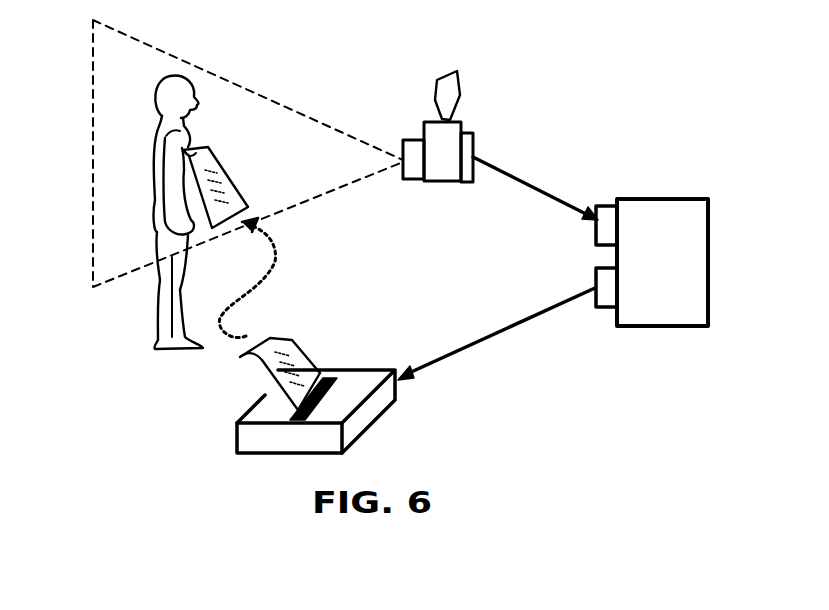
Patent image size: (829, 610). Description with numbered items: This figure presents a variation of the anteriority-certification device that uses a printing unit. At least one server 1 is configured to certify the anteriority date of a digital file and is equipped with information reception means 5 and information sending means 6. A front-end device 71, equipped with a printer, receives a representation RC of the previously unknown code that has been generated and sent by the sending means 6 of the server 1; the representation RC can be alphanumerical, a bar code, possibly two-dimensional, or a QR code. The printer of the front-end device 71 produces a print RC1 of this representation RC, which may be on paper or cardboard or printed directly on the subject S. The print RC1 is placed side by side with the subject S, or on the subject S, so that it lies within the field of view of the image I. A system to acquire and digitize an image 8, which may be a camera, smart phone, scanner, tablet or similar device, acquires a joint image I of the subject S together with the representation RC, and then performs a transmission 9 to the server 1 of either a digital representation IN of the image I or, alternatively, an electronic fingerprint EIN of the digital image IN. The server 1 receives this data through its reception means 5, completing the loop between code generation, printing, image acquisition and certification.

The server 1 is at (708, 199).
The information reception means 5 is at (603, 206).
The information sending means 6 is at (603, 300).
The system to acquire and digitize an image 8 is at (455, 154).
The transmission to the server 9 is at (477, 130).
The front-end device 71 is at (240, 428).
The image I is at (92, 68).
The subject S is at (150, 138).
The print of the code representation RC1 is at (253, 177).
The representation of the previously unknown code RC is at (496, 334).
The digital representation of the image IN is at (535, 177).
The electronic fingerprint of the digital image EIN is at (528, 225).